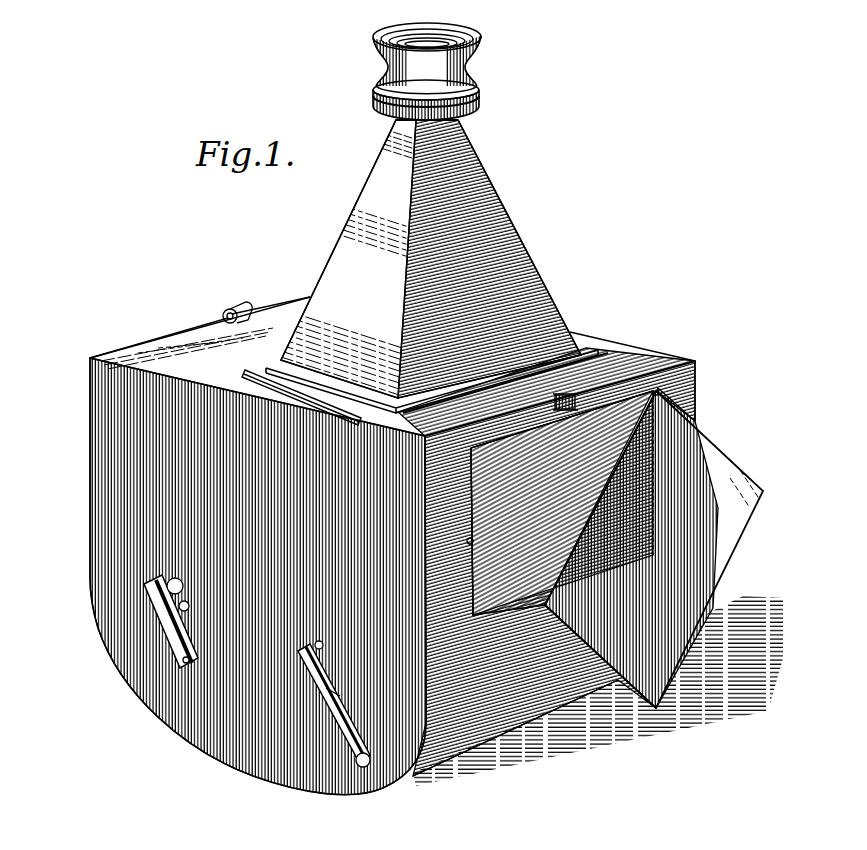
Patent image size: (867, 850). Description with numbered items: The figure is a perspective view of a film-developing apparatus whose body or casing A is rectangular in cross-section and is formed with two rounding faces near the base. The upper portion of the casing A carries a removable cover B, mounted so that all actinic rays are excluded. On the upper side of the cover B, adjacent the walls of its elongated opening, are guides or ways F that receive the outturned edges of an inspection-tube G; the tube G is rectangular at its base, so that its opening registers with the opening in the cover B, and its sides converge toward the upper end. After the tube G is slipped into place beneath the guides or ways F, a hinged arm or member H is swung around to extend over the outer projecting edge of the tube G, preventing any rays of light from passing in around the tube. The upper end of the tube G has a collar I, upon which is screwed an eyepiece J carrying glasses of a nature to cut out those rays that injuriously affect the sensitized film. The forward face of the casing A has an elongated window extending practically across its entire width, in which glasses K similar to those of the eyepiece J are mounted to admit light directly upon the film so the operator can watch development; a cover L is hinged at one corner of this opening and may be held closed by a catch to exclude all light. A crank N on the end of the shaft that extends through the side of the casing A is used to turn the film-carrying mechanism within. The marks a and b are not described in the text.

The body or casing A is at (72, 442).
The removable cover B is at (200, 333).
The guides or ways F is at (442, 398).
The inspection-tube G is at (429, 248).
The hinged arm or member H is at (236, 366).
The collar I is at (469, 100).
The eyepiece J is at (423, 58).
The glass or glasses K is at (556, 516).
The cover L is at (659, 548).
The crank N is at (363, 721).
The pin a is at (468, 534).
The hinge pin b is at (660, 399).